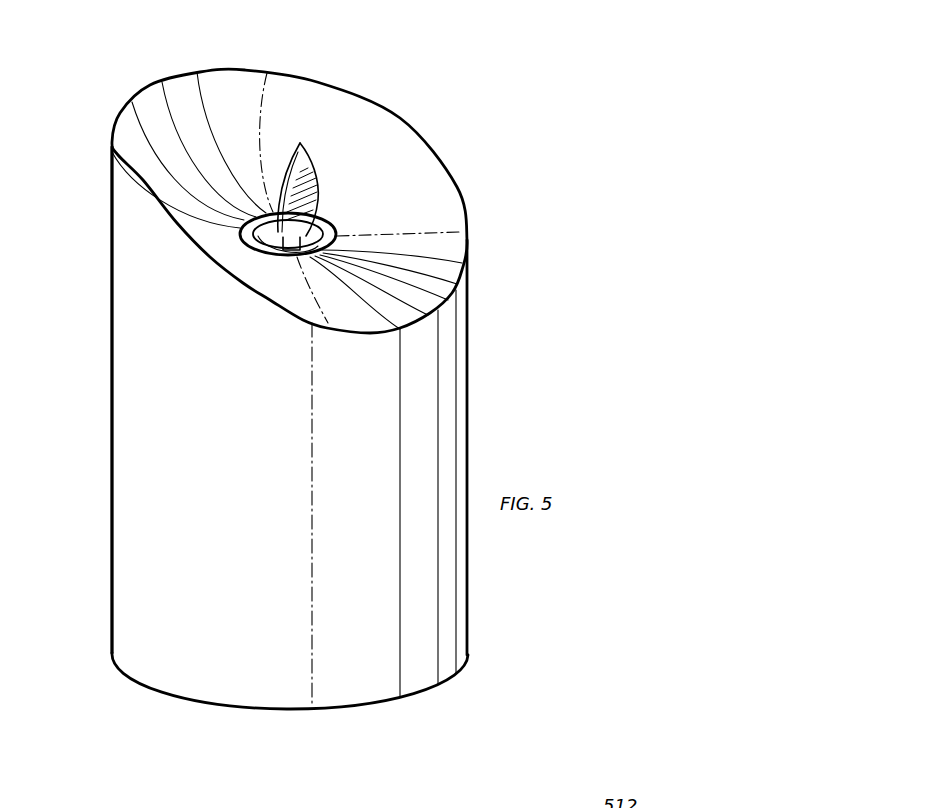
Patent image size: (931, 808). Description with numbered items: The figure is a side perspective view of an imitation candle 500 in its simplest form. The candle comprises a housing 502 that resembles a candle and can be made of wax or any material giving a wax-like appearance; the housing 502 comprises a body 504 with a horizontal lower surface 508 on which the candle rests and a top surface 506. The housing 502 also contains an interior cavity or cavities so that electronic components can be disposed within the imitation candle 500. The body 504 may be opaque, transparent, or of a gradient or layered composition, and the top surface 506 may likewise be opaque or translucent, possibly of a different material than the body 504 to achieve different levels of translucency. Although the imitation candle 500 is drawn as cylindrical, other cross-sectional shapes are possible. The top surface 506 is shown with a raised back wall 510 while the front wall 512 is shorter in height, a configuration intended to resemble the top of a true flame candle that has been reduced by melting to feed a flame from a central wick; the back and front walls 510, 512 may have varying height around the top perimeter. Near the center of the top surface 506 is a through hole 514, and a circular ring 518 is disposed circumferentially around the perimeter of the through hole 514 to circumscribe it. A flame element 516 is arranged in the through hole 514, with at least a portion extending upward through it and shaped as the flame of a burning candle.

The imitation candle 500 is at (446, 86).
The housing 502 is at (113, 298).
The body 504 is at (170, 417).
The top surface 506 is at (427, 178).
The horizontal lower surface 508 is at (191, 699).
The raised back wall 510 is at (148, 83).
The front wall 512 is at (433, 313).
The through hole 514 is at (269, 237).
The flame element 516 is at (317, 180).
The circular ring 518 is at (335, 235).